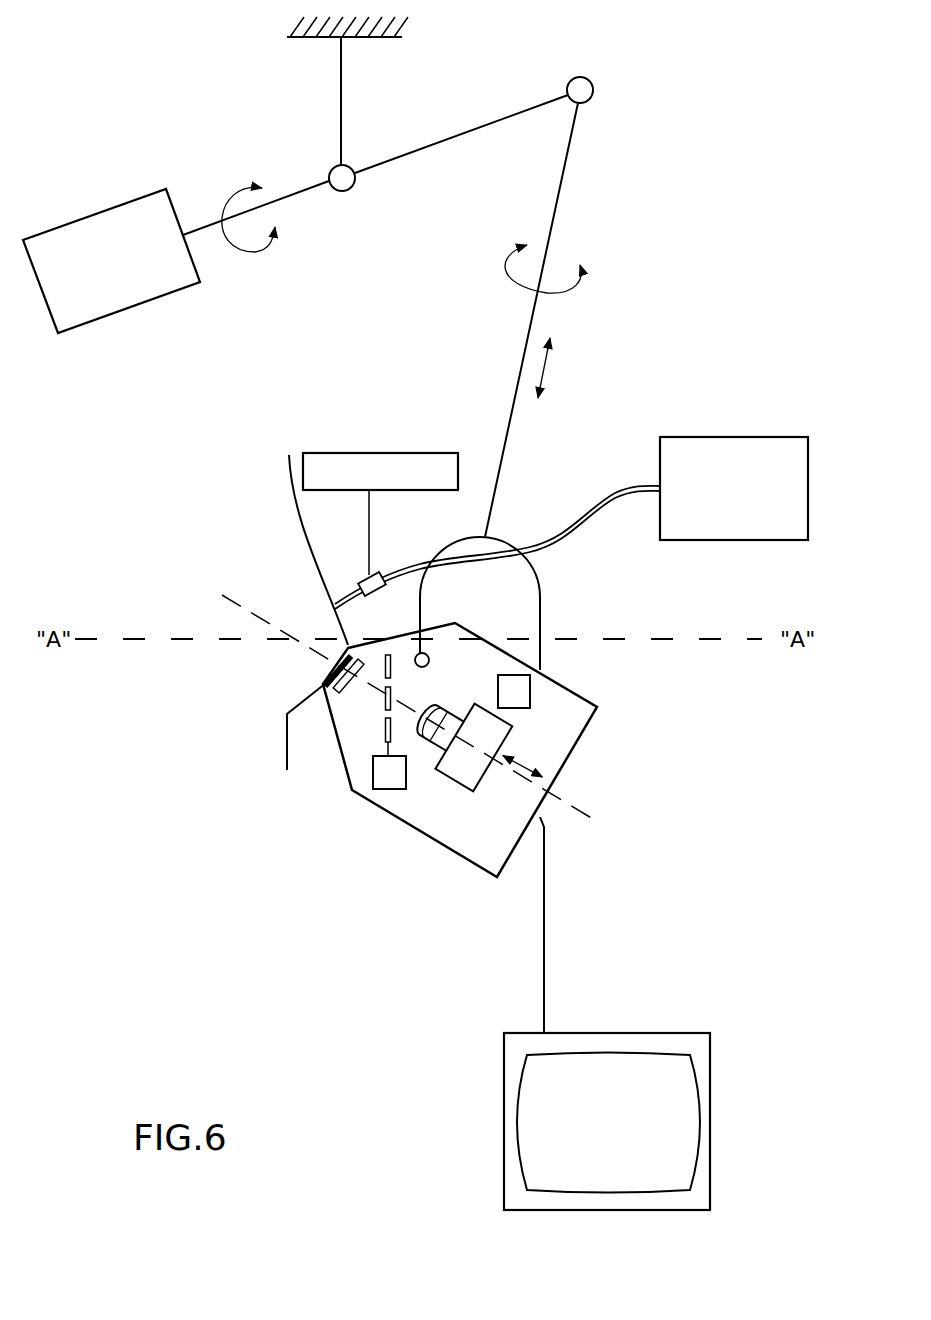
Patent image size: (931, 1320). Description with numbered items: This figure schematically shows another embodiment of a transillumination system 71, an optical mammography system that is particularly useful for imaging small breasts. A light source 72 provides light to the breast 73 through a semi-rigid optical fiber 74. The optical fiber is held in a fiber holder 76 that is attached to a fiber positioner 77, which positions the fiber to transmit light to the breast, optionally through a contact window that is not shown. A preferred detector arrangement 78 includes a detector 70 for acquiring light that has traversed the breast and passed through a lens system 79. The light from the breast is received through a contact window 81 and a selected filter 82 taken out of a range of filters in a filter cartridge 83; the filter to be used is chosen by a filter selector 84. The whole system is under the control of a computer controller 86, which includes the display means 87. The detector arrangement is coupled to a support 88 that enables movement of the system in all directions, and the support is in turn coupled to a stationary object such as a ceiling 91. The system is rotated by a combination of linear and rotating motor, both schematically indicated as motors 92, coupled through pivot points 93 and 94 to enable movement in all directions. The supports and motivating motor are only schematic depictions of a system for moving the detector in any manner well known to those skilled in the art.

The detector 70 is at (458, 787).
The transillumination system 71 is at (631, 750).
The light source 72 is at (720, 437).
The breast 73 is at (288, 587).
The semi-rigid optical fiber 74 is at (486, 558).
The fiber holder 76 is at (372, 577).
The fiber positioner 77 is at (372, 452).
The detector arrangement 78 is at (473, 633).
The lens system 79 is at (425, 745).
The contact window 81 is at (342, 705).
The filter 82 is at (392, 692).
The filter cartridge 83 is at (386, 632).
The filter selector 84 is at (395, 793).
The computer controller 86 is at (636, 1032).
The display means 87 is at (651, 1117).
The support 88 is at (339, 204).
The ceiling 91 is at (375, 40).
The linear and rotating motor 92 is at (163, 300).
The pivot point 93 is at (332, 167).
The pivot point 94 is at (597, 80).